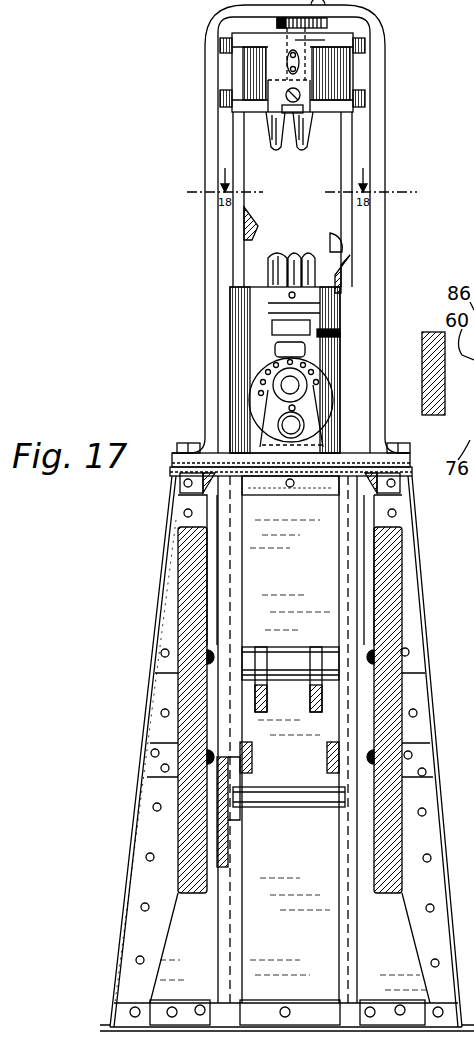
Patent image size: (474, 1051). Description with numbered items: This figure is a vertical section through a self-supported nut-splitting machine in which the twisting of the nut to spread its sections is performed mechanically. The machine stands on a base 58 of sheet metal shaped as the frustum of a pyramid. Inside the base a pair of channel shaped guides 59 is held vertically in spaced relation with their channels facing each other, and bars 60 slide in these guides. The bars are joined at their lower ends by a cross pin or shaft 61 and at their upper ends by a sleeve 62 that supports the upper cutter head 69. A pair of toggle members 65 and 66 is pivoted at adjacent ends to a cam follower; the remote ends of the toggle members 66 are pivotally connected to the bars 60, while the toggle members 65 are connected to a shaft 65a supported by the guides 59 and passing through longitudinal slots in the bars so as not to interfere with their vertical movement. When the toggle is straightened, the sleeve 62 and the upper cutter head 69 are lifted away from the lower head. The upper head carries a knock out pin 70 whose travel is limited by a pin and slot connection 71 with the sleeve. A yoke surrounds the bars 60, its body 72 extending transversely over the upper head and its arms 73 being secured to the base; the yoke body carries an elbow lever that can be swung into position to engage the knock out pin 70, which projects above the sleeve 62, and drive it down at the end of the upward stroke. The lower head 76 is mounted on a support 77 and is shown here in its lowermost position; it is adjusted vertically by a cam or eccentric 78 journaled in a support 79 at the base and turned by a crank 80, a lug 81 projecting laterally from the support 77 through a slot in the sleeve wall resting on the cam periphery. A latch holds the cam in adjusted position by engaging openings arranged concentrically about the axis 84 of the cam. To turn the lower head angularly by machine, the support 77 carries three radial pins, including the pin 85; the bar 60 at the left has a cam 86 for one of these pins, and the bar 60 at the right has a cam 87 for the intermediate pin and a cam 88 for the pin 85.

The base 58 is at (420, 578).
The channel shaped guides 59 is at (347, 560).
The bars 60 is at (351, 148).
The cross pin or shaft 61 is at (302, 807).
The sleeve 62 is at (297, 42).
The toggle members 65 is at (312, 703).
The shaft 65a is at (296, 647).
The toggle members 66 is at (252, 760).
The upper cutter head 69 is at (270, 133).
The knock out pin 70 is at (275, 22).
The pin and slot connection 71 is at (288, 62).
The body of the yoke 72 is at (278, 9).
The arms of the yoke 73 is at (380, 325).
The lower head 76 is at (278, 295).
The support 77 is at (285, 333).
The cam or eccentric 78 is at (255, 400).
The support 79 is at (305, 452).
The crank 80 is at (293, 425).
The lug 81 is at (288, 350).
The axis of the cam 84 is at (292, 385).
The radial pin 85 is at (340, 333).
The cam 86 is at (251, 222).
The cam 87 is at (332, 233).
The cam 88 is at (350, 257).